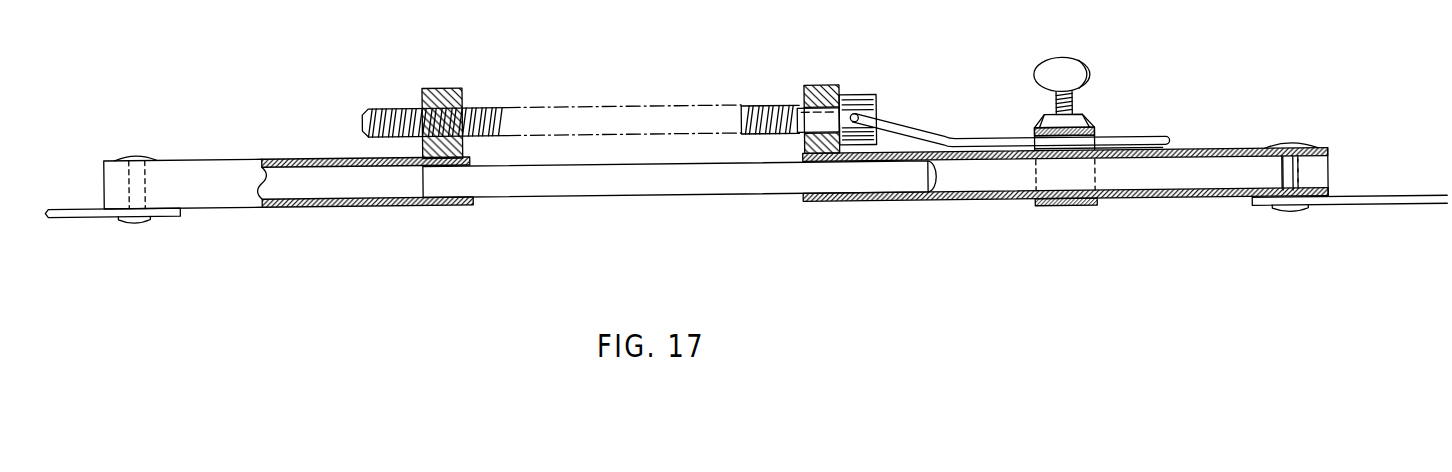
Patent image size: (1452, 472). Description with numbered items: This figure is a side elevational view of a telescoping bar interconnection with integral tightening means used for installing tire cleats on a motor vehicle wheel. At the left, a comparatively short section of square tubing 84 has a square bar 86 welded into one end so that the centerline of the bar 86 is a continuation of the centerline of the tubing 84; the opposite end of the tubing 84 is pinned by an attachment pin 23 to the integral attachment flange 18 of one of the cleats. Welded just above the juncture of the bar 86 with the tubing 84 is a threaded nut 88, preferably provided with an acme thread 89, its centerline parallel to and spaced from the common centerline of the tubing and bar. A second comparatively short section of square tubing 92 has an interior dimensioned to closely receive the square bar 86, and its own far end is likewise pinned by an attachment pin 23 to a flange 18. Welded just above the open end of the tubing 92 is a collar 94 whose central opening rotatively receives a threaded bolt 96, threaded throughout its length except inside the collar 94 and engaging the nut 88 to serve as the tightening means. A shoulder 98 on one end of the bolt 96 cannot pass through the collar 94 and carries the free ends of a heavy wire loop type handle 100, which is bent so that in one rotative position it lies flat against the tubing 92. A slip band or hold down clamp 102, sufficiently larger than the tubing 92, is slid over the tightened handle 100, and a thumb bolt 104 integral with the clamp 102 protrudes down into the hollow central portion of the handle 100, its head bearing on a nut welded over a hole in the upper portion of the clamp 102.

The integral attachment flange 18 is at (84, 215).
The attachment pin 23 is at (139, 183).
The section of square tubing 84 is at (317, 209).
The square bar 86 is at (676, 188).
The threaded nut 88 is at (432, 88).
The acme thread 89 is at (463, 89).
The section of square tubing 92 is at (1178, 198).
The collar 94 is at (823, 85).
The threaded bolt 96 is at (751, 106).
The shoulder 98 is at (858, 101).
The loop type handle 100 is at (917, 131).
The hold down clamp 102 is at (1058, 207).
The thumb bolt 104 is at (1061, 70).